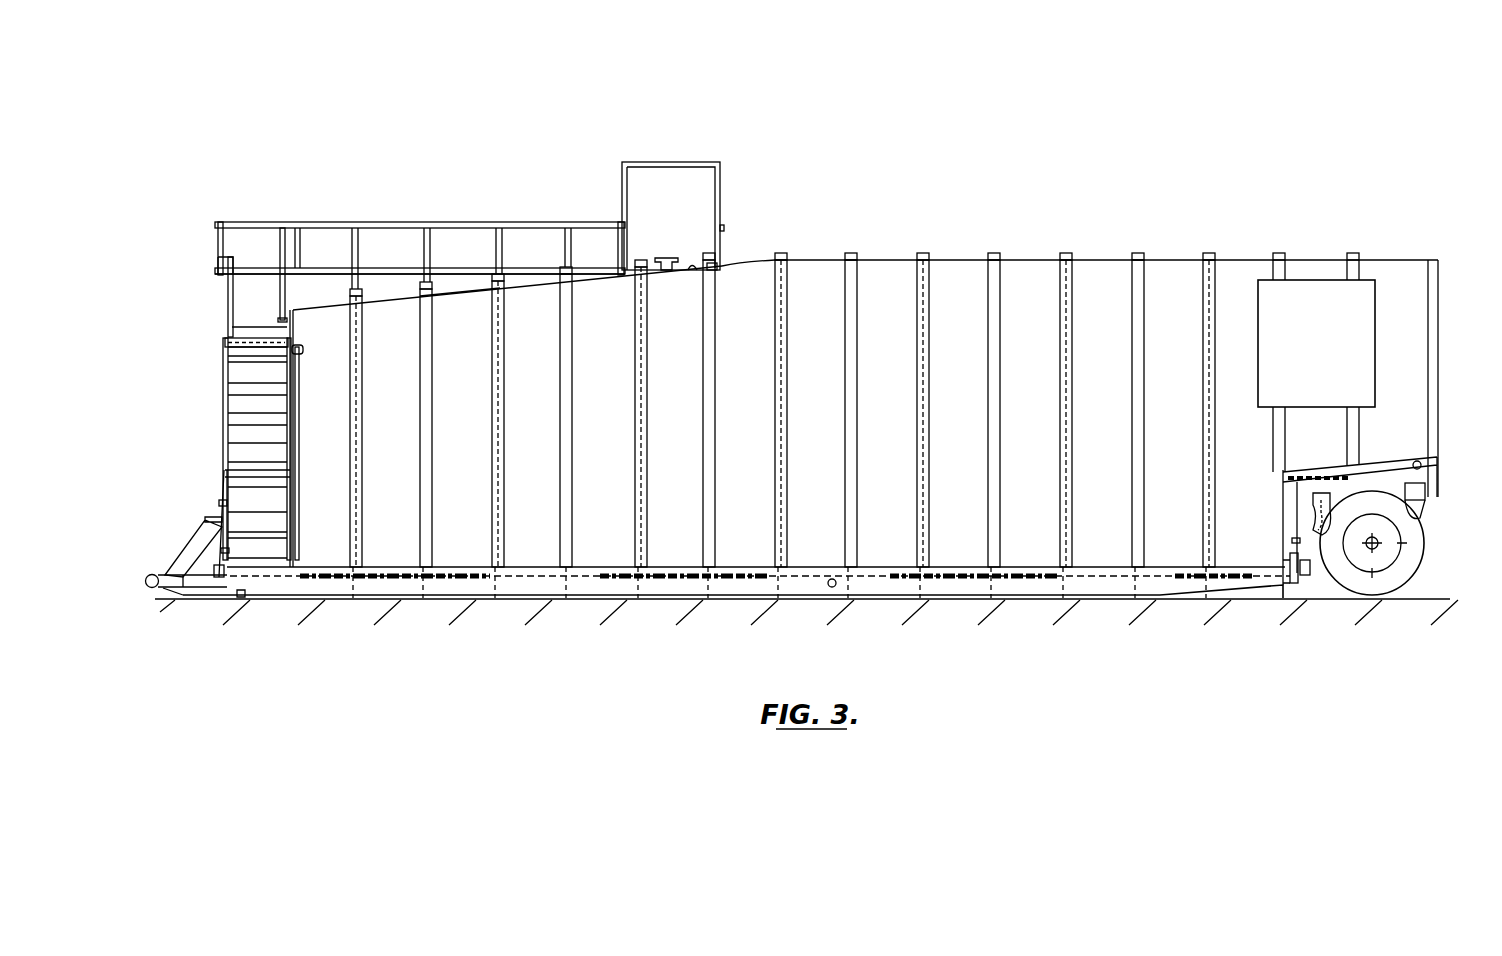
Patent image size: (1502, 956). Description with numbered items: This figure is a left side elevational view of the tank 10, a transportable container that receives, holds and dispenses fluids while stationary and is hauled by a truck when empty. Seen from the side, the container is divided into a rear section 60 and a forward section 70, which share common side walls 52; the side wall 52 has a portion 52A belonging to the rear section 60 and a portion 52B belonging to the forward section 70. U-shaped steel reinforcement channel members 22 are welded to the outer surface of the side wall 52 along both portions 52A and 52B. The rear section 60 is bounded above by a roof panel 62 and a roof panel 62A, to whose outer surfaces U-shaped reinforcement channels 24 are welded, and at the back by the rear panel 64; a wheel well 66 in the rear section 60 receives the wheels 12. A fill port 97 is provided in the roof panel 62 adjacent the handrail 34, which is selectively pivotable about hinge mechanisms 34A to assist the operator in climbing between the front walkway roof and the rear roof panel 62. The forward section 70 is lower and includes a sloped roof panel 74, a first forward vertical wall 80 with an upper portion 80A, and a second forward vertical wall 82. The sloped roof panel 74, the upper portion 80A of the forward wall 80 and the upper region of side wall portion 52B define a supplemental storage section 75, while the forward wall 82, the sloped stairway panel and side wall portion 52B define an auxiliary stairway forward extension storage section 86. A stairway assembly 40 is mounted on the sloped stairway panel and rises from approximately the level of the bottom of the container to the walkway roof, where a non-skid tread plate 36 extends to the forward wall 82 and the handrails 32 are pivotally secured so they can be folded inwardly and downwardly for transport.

The tank 10 is at (890, 110).
The wheels 12 is at (1367, 585).
The U-shaped reinforcement channel members 22 is at (773, 537).
The U-shaped reinforcement channels 24 is at (787, 252).
The handrails 32 is at (380, 222).
The handrail 34 is at (693, 163).
The hinge mechanisms 34A is at (733, 263).
The tread plate 36 is at (262, 332).
The stairway assembly 40 is at (223, 437).
The side walls 52 is at (957, 337).
The side wall portion 52A is at (1163, 553).
The side wall portion 52B is at (528, 547).
The rear section 60 is at (1215, 203).
The roof panel 62 is at (1173, 263).
The roof panel 62A is at (697, 273).
The rear panel 64 is at (1428, 330).
The wheel well 66 is at (1318, 573).
The forward section 70 is at (457, 148).
The sloped roof panel 74 is at (393, 290).
The supplemental storage section 75 is at (455, 290).
The first forward vertical wall 80 is at (290, 398).
The upper portion of forward wall 80A is at (293, 313).
The second forward vertical wall 82 is at (223, 390).
The stairway forward extension storage section 86 is at (212, 408).
The fill port 97 is at (667, 258).